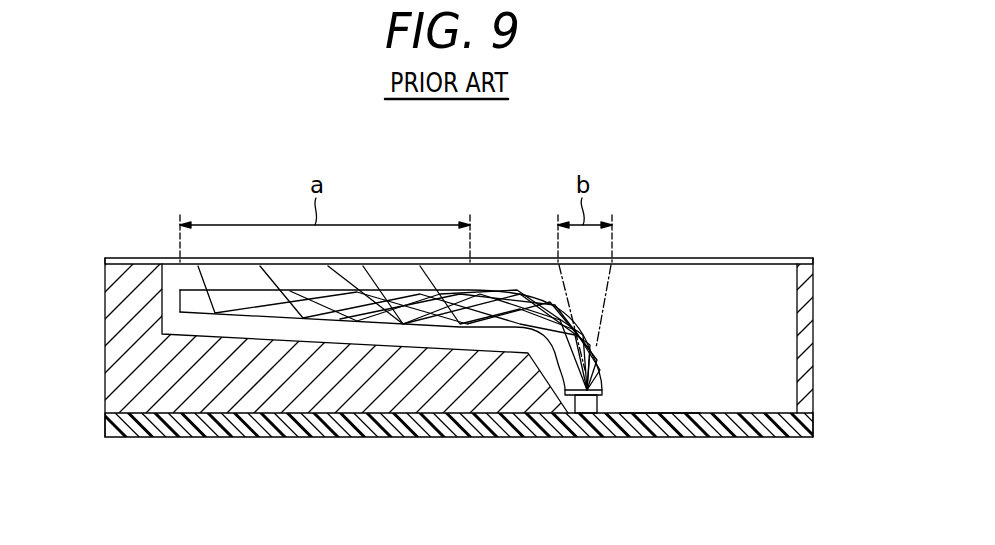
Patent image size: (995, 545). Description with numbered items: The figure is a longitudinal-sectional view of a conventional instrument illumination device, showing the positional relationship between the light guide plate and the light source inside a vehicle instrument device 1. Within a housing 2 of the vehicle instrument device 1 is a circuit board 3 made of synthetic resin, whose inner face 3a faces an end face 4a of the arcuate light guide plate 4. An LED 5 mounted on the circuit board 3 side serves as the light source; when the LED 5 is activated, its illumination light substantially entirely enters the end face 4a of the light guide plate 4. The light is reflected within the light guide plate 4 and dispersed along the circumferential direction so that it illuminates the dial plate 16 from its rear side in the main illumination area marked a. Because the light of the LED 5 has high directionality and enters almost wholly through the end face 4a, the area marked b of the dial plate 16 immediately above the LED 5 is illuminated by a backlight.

The vehicle instrument device 1 is at (810, 250).
The housing 2 is at (99, 305).
The circuit board 3 is at (737, 438).
The inner face of the circuit board 3a is at (640, 413).
The light guide plate 4 is at (502, 287).
The end face of the light guide plate 4a is at (572, 395).
The LED 5 is at (585, 410).
The dial plate 16 is at (718, 258).